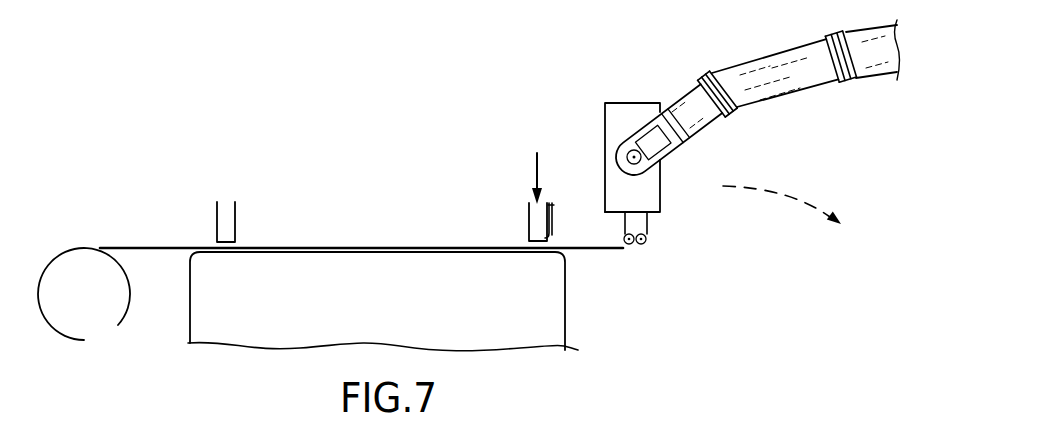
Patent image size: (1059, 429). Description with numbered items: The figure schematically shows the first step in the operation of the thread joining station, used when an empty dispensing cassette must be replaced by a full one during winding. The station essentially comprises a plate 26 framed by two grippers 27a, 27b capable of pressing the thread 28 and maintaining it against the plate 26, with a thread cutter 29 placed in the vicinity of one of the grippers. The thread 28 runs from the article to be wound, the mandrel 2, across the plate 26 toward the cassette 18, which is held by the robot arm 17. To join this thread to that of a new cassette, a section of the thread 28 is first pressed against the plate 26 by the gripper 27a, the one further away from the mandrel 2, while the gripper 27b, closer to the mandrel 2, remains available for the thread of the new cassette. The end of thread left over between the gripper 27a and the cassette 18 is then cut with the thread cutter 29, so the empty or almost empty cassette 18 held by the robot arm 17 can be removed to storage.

The mandrel 2 is at (85, 317).
The robot arm 17 is at (787, 75).
The cassette 18 is at (645, 186).
The plate 26 is at (230, 292).
The gripper 27a is at (533, 212).
The gripper 27b is at (229, 212).
The thread 28 is at (137, 237).
The thread cutter 29 is at (556, 207).